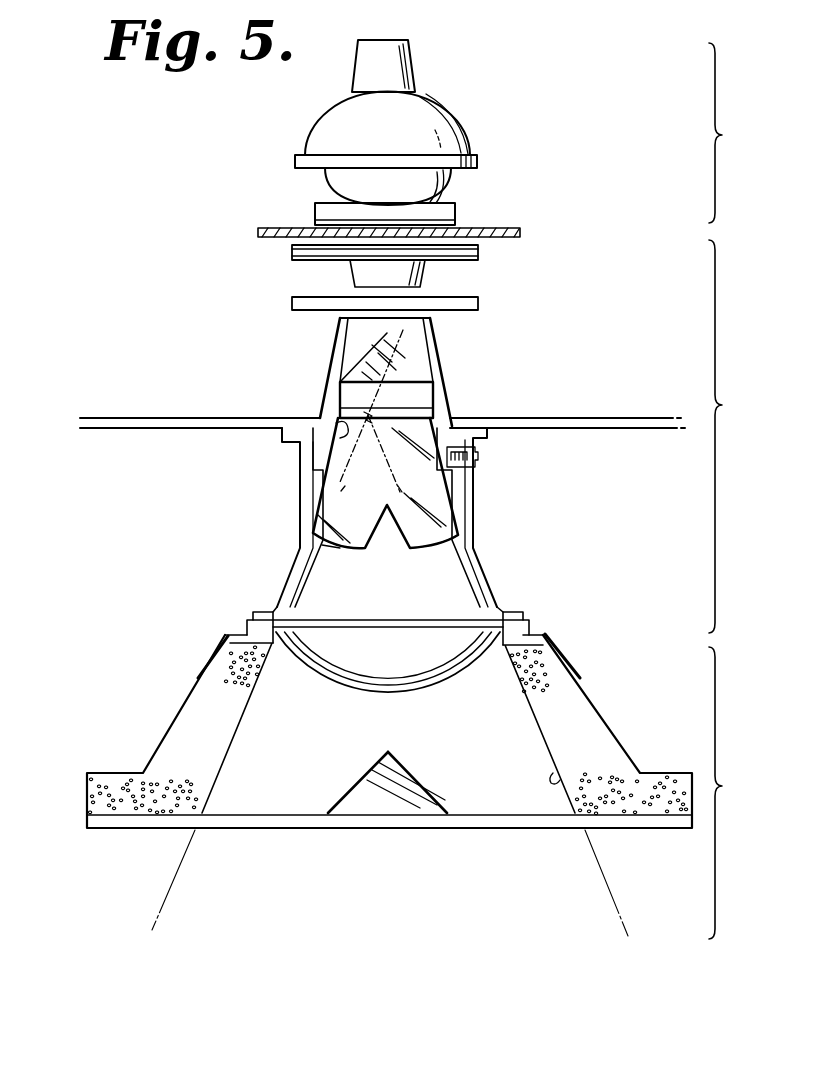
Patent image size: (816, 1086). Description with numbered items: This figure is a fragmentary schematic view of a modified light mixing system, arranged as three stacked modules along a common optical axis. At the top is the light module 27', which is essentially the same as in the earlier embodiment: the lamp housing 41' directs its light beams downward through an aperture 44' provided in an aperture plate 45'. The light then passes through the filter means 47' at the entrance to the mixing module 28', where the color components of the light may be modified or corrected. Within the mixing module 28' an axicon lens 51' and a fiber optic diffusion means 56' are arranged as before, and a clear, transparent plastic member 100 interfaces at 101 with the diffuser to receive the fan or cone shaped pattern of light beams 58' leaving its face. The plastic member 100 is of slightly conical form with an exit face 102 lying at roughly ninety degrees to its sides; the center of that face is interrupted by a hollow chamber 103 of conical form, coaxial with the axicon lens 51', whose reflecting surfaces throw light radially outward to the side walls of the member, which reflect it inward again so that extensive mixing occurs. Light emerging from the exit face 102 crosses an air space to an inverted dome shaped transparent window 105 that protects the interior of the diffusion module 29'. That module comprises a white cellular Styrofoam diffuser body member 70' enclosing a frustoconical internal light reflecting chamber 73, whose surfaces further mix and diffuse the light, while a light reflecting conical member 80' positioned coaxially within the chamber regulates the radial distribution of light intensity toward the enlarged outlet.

The light module 27' is at (734, 133).
The mixing module 28' is at (736, 436).
The diffusion module 29' is at (735, 793).
The lamp housing 41' is at (403, 122).
The aperture 44' is at (349, 199).
The aperture plate 45' is at (423, 203).
The filter means 47' is at (335, 277).
The axicon lens 51' is at (418, 371).
The fiber optic diffusion means 56' is at (441, 396).
The light beams 58' is at (354, 517).
The transparent plastic member 100 is at (430, 497).
The interface 101 is at (340, 424).
The exit face 102 is at (337, 547).
The hollow chamber 103 is at (400, 547).
The transparent window 105 is at (376, 666).
The diffuser body member 70' is at (372, 785).
The internal light reflecting chamber 73 is at (553, 773).
The light reflecting conical member 80' is at (402, 780).